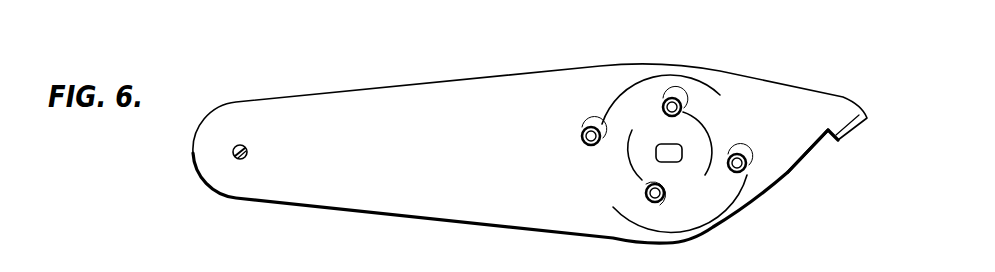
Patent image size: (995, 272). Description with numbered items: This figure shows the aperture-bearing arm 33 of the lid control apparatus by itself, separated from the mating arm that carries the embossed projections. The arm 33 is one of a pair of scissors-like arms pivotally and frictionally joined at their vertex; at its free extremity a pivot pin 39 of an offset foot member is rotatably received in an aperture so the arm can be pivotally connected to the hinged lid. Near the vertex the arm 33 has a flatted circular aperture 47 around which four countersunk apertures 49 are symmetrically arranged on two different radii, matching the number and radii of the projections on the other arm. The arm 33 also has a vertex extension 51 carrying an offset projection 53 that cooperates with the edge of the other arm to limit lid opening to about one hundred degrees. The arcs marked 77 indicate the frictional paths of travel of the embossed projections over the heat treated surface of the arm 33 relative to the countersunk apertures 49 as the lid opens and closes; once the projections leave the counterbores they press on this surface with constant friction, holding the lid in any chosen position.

The arm 33 is at (398, 187).
The pivot pin 39 is at (248, 157).
The flatted circular aperture 47 is at (662, 145).
The countersunk aperture 49 is at (682, 99).
The vertex extension 51 is at (788, 172).
The offset projection 53 is at (855, 128).
The paths of travel 77 is at (622, 91).